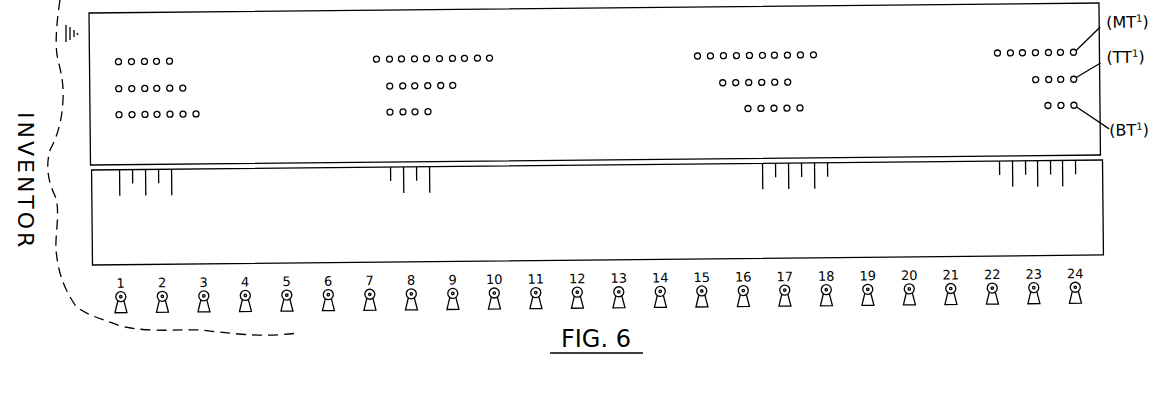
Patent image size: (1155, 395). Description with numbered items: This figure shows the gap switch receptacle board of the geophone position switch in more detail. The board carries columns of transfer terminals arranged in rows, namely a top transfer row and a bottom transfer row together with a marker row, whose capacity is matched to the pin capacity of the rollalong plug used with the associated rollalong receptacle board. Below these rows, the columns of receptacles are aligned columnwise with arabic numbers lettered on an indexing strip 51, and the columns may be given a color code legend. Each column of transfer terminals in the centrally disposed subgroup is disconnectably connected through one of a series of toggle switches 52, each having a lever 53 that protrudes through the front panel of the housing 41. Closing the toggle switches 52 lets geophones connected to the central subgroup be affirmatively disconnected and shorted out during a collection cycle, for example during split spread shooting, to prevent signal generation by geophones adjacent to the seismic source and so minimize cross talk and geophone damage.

The housing 41 is at (64, 32).
The indexing strip 51 is at (1102, 239).
The toggle switch 52 is at (1078, 297).
The lever 53 is at (1078, 307).